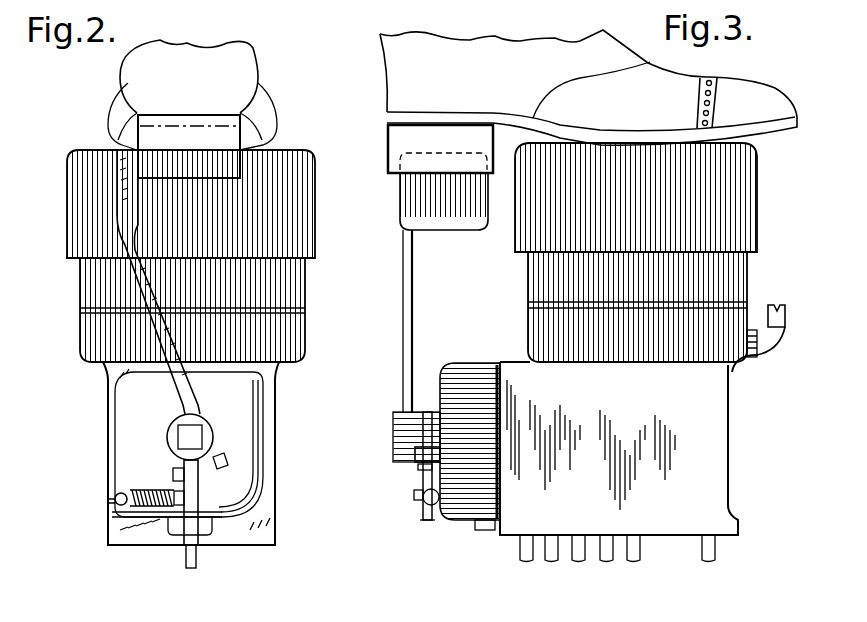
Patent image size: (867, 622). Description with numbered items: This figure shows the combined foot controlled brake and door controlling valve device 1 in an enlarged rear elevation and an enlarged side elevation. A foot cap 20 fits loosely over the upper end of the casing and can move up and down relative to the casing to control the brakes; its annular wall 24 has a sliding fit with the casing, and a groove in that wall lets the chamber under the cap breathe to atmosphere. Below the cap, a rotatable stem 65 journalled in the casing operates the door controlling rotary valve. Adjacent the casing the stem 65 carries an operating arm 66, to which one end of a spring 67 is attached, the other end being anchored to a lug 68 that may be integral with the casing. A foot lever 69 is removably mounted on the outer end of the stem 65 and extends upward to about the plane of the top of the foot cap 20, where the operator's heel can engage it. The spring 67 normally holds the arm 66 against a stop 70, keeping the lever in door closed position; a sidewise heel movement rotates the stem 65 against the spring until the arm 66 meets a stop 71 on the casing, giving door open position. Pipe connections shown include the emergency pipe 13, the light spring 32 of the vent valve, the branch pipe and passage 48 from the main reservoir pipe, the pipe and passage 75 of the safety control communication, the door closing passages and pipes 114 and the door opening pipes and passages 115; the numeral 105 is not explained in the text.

In FIG. 2, the combined foot controlled brake and door controlling valve device 1 is at (275, 298).
In FIG. 3, the combined foot controlled brake and door controlling valve device 1 is at (738, 285).
In FIG. 3, the emergency pipe 13 is at (578, 562).
In FIG. 2, the foot cap 20 is at (300, 157).
In FIG. 3, the foot cap 20 is at (728, 188).
In FIG. 2, the annular wall 24 is at (293, 228).
In FIG. 3, the annular wall 24 is at (533, 220).
In FIG. 3, the spring 32 is at (708, 562).
In FIG. 3, the branch pipe and passage 48 is at (637, 559).
In FIG. 2, the rotatable stem 65 is at (190, 437).
In FIG. 2, the operating arm 66 is at (196, 490).
In FIG. 3, the operating arm 66 is at (425, 518).
In FIG. 2, the spring 67 is at (133, 490).
In FIG. 3, the spring 67 is at (435, 507).
In FIG. 2, the lug 68 is at (112, 494).
In FIG. 3, the lug 68 is at (416, 502).
In FIG. 2, the foot lever 69 is at (122, 197).
In FIG. 3, the foot lever 69 is at (413, 336).
In FIG. 2, the stop 70 is at (165, 482).
In FIG. 3, the stop 70 is at (417, 480).
In FIG. 2, the stop 71 is at (223, 460).
In FIG. 3, the stop 71 is at (414, 463).
In FIG. 3, the pipe and passage 75 is at (781, 344).
In FIG. 3, the terminal 105 is at (605, 562).
In FIG. 2, the door closing passages and pipes 114 is at (192, 562).
In FIG. 3, the door closing passages and pipes 114 is at (527, 562).
In FIG. 3, the door opening pipes and passages 115 is at (552, 562).